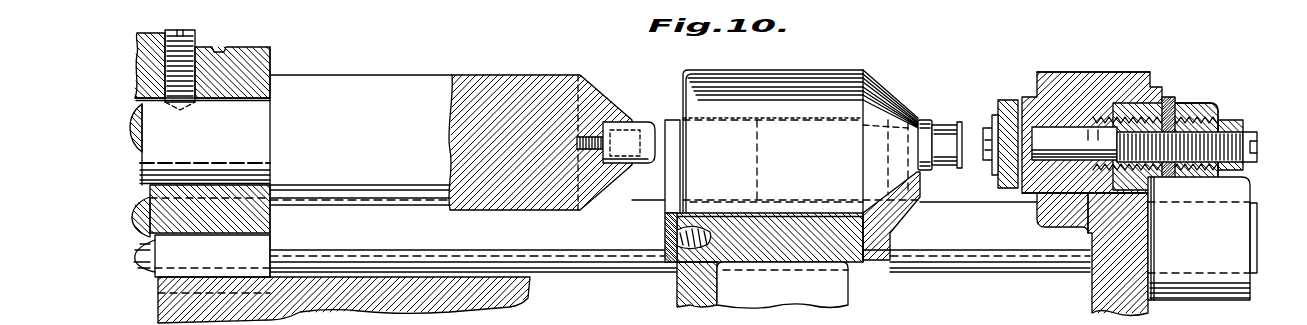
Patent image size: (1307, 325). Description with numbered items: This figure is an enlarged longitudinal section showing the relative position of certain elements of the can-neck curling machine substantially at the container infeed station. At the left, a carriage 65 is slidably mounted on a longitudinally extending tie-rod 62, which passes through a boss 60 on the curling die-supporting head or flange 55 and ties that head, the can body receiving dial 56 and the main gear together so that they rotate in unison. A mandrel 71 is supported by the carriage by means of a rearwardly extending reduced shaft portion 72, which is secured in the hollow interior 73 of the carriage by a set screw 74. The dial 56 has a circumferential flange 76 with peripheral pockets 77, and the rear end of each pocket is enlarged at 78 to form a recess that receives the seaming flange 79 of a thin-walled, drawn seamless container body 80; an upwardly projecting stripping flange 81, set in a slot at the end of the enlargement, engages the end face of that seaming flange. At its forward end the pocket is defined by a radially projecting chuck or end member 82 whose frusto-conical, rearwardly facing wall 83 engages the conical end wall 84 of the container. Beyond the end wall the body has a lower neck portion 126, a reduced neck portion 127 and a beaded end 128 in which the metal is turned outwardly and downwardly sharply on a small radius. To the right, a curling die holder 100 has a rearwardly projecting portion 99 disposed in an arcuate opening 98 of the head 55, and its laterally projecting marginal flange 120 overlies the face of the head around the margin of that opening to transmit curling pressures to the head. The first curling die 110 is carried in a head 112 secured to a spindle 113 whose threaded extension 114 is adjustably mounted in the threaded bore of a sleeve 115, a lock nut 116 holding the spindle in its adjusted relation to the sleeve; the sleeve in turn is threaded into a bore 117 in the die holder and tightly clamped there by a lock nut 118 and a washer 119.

The flange 55 is at (1102, 290).
The annular member 56 is at (692, 287).
The boss 60 is at (1200, 280).
The tie-rod 62 is at (552, 245).
The carriage 65 is at (240, 65).
The mandrel 71 is at (509, 86).
The reduced shaft portion 72 is at (237, 133).
The hollow interior 73 is at (270, 100).
The set screw 74 is at (197, 48).
The circumferential flange 76 is at (835, 265).
The pocket 77 is at (830, 218).
The enlargement 78 is at (730, 222).
The seaming flange 79 is at (687, 72).
The container body 80 is at (795, 80).
The stripping flange 81 is at (670, 217).
The chuck or end member 82 is at (875, 232).
The frusto-conical wall 83 is at (900, 198).
The conical end wall 84 is at (877, 92).
The arcuate opening 98 is at (1115, 72).
The rearwardly projecting portion 99 is at (1132, 180).
The curling die holder 100 is at (1058, 75).
The first curling die 110 is at (986, 160).
The head 112 is at (1008, 100).
The spindle 113 is at (1055, 132).
The threaded extension 114 is at (1228, 122).
The sleeve 115 is at (1170, 131).
The lock nut 116 is at (1250, 132).
The bore 117 is at (1115, 110).
The lock nut 118 is at (1200, 112).
The washer 119 is at (1168, 97).
The marginal flange 120 is at (1056, 212).
The lower neck portion 126 is at (926, 120).
The reduced neck portion 127 is at (948, 126).
The beaded end 128 is at (958, 124).